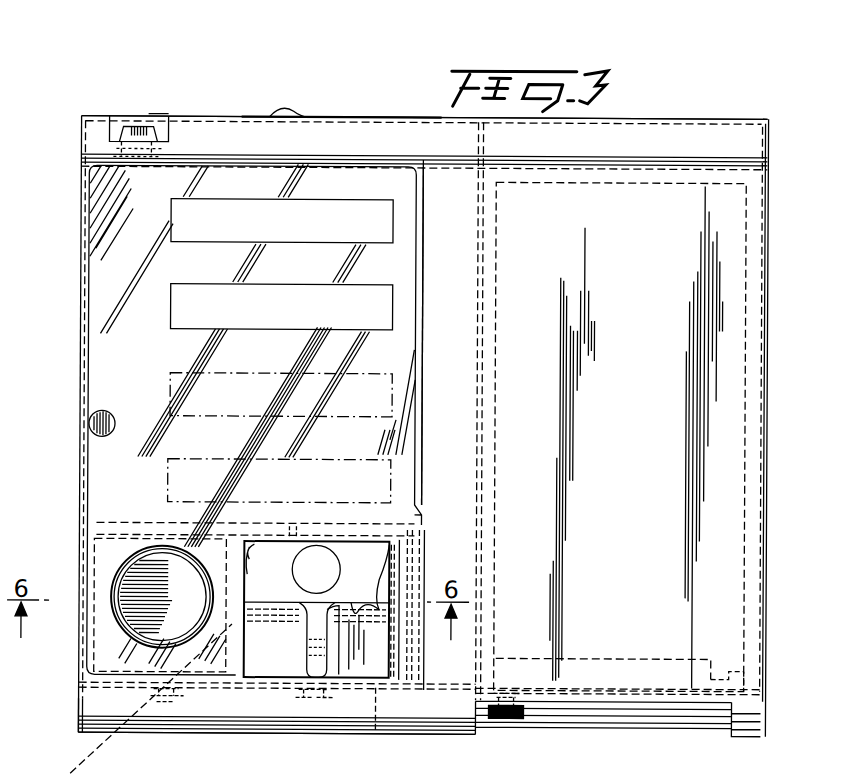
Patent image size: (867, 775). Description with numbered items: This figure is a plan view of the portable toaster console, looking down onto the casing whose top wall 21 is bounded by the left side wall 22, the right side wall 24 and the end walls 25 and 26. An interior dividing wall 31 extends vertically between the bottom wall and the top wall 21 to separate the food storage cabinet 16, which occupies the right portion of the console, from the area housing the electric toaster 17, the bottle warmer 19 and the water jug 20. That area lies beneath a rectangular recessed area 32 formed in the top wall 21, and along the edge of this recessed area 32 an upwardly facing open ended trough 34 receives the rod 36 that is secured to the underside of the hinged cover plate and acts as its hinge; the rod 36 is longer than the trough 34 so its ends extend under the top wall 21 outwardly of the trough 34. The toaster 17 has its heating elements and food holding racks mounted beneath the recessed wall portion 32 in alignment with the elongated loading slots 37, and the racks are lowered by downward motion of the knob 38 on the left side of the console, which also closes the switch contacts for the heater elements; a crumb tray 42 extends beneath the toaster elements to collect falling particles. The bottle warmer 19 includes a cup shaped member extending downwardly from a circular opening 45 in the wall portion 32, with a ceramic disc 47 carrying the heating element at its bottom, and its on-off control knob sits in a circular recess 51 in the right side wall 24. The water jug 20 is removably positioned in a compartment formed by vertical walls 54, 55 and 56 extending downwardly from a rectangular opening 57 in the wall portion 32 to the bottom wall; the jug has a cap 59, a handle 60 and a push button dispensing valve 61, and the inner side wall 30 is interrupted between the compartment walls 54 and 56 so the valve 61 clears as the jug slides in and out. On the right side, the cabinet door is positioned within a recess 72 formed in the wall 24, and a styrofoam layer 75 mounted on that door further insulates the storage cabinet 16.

The food storage cabinet 16 is at (735, 340).
The electric toaster 17 is at (212, 193).
The bottle warmer 19 is at (120, 628).
The water jug 20 is at (357, 577).
The top wall 21 is at (670, 240).
The left side wall 22 is at (672, 122).
The right side wall 24 is at (440, 733).
The end wall 25 is at (767, 412).
The end wall 26 is at (80, 372).
The inner side wall 30 is at (222, 692).
The interior dividing wall 31 is at (480, 238).
The rectangular recessed area 32 is at (110, 285).
The trough 34 is at (422, 450).
The rod 36 is at (418, 510).
The loading slots 37 is at (190, 223).
The knob 38 is at (130, 137).
The crumb tray 42 is at (307, 117).
The circular opening 45 is at (125, 575).
The ceramic disc 47 is at (138, 605).
The circular recess 51 is at (200, 707).
The compartment wall 54 is at (80, 722).
The compartment wall 55 is at (297, 530).
The compartment wall 56 is at (400, 590).
The rectangular opening 57 is at (247, 560).
The cap 59 is at (313, 555).
The handle 60 is at (318, 628).
The dispensing valve 61 is at (318, 700).
The recess 72 is at (733, 710).
The styrofoam layer 75 is at (603, 663).